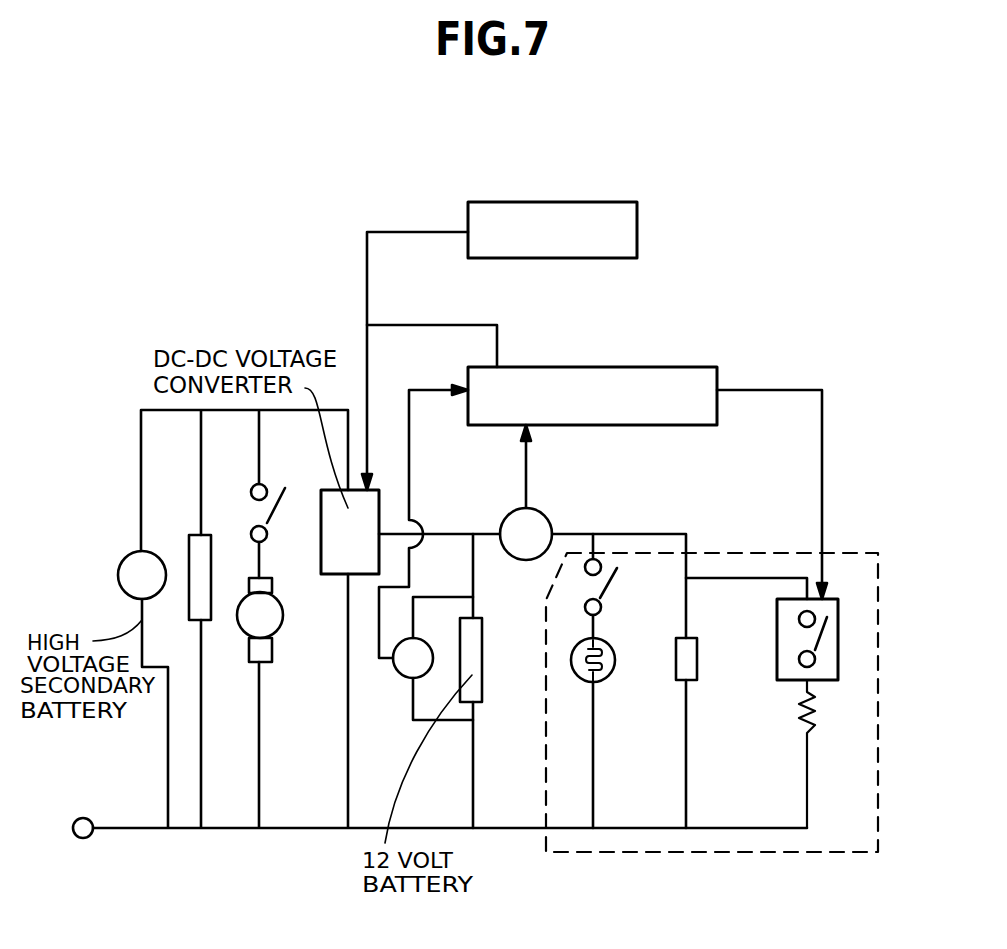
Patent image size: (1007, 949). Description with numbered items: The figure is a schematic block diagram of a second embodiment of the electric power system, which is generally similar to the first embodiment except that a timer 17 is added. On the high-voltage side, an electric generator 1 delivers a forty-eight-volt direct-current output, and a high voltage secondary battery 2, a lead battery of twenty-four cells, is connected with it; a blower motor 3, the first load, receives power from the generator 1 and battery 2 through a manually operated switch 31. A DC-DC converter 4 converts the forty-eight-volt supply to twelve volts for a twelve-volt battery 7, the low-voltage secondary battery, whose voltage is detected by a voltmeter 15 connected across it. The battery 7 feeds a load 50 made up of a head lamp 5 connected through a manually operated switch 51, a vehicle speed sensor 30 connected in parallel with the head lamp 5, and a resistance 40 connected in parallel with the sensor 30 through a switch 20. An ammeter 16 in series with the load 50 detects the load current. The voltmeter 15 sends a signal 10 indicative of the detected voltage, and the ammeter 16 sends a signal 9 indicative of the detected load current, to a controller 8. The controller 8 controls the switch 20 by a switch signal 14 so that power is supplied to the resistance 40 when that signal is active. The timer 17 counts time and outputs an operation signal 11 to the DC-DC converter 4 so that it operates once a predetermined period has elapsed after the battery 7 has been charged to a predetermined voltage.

The electric generator 1 is at (150, 553).
The high voltage secondary battery 2 is at (194, 590).
The blower motor 3 is at (248, 620).
The switch 31 is at (278, 513).
The DC-DC converter 4 is at (331, 576).
The operation signal 11 is at (367, 332).
The timer 17 is at (637, 225).
The controller 8 is at (664, 367).
The signal 10 is at (409, 448).
The voltmeter 15 is at (400, 676).
The 12-volt battery 7 is at (482, 640).
The ammeter 16 is at (545, 518).
The signal 9 is at (527, 473).
The switch signal 14 is at (755, 390).
The load 50 is at (760, 852).
The switch 51 is at (610, 586).
The head lamp 5 is at (610, 677).
The vehicle speed sensor 30 is at (697, 672).
The switch 20 is at (777, 633).
The resistance 40 is at (823, 754).